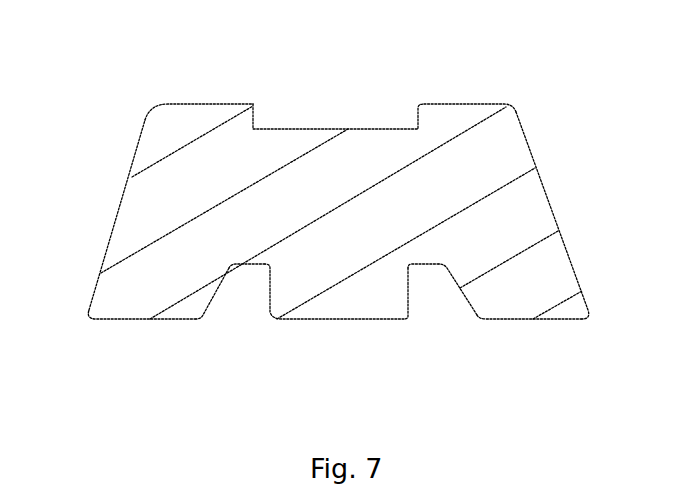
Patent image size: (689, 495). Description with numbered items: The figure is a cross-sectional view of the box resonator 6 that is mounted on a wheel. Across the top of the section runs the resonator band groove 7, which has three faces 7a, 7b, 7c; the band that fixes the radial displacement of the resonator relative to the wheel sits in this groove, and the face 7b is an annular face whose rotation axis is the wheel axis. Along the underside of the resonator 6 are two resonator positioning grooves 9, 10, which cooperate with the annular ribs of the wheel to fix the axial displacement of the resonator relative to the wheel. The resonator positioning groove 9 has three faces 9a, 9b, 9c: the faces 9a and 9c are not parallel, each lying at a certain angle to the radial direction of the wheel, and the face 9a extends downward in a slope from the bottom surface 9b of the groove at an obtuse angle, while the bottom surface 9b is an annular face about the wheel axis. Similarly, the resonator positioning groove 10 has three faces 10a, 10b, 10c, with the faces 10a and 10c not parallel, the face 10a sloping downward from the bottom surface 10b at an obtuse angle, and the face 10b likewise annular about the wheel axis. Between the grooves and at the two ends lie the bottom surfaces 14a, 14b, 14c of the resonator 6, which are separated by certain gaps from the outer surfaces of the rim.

The resonator 6 is at (173, 145).
The resonator band groove 7 is at (348, 118).
The face of resonator band groove 7a is at (253, 111).
The face of resonator band groove 7b is at (300, 128).
The face of resonator band groove 7c is at (421, 128).
The resonator positioning groove 9 is at (238, 303).
The face of resonator positioning groove 9a is at (213, 300).
The bottom surface of groove 9b is at (247, 263).
The face of resonator positioning groove 9c is at (273, 289).
The resonator positioning groove 10 is at (433, 300).
The face of resonator positioning groove 10a is at (467, 300).
The bottom surface of groove 10b is at (430, 263).
The face of resonator positioning groove 10c is at (408, 288).
The bottom surface of resonator 14a is at (160, 321).
The bottom surface of resonator 14b is at (343, 321).
The bottom surface of resonator 14c is at (540, 322).